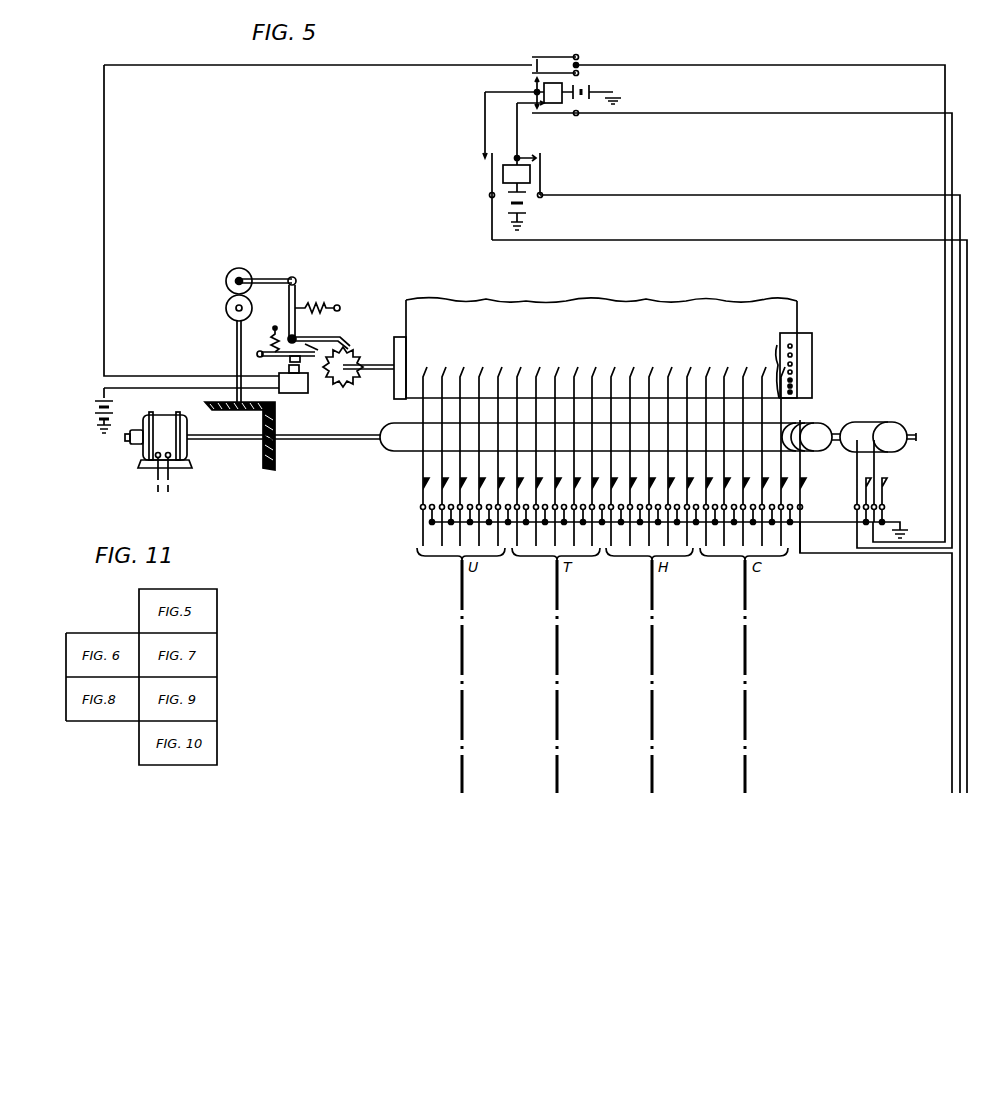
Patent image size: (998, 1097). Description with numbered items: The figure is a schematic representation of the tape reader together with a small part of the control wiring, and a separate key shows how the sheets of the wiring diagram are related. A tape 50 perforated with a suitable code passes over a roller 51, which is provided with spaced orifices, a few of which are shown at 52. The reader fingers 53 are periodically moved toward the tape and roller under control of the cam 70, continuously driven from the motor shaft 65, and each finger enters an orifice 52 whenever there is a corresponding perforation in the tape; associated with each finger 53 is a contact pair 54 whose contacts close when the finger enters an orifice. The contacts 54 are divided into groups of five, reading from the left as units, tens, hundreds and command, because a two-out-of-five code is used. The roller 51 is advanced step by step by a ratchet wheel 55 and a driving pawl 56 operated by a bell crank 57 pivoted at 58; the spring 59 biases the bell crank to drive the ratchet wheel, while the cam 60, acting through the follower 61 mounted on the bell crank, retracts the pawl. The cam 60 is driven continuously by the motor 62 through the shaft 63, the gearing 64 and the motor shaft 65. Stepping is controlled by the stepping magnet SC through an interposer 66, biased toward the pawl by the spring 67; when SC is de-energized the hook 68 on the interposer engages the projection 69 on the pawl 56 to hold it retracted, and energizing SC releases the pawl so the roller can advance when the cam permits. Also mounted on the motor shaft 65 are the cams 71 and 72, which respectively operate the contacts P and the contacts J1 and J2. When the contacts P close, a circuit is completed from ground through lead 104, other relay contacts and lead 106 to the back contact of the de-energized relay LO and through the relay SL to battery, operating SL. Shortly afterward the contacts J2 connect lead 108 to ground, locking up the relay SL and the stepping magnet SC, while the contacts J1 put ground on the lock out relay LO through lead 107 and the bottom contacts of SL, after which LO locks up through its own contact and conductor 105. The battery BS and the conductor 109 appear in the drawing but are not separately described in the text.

The tape 50 is at (799, 305).
The roller 51 is at (812, 382).
The orifices 52 is at (794, 366).
The reader fingers 53 is at (422, 410).
The contact pair 54 is at (445, 476).
The ratchet wheel 55 is at (375, 363).
The driving pawl 56 is at (349, 347).
The bell crank 57 is at (300, 292).
The pivot 58 is at (292, 277).
The spring 59 is at (318, 306).
The cam 60 is at (227, 311).
The follower 61 is at (232, 274).
The motor 62 is at (140, 458).
The shaft 63 is at (235, 345).
The gearing 64 is at (278, 405).
The motor shaft 65 is at (306, 441).
The interposer 66 is at (257, 356).
The spring 67 is at (275, 326).
The hook 68 is at (318, 352).
The projection 69 is at (306, 339).
The cam 70 is at (388, 452).
The cam 71 is at (815, 425).
The cam 72 is at (870, 423).
The lead 104 is at (822, 553).
The conductor 105 is at (756, 195).
The lead 106 is at (750, 240).
The lead 107 is at (757, 113).
The lead 108 is at (768, 65).
The line 109 is at (106, 117).
The battery source BS is at (94, 410).
The stepping magnet SC is at (293, 379).
The relay SL is at (552, 159).
The lock out relay LO is at (521, 166).
The contacts P is at (800, 478).
The contacts J1 is at (858, 478).
The contacts J2 is at (880, 478).